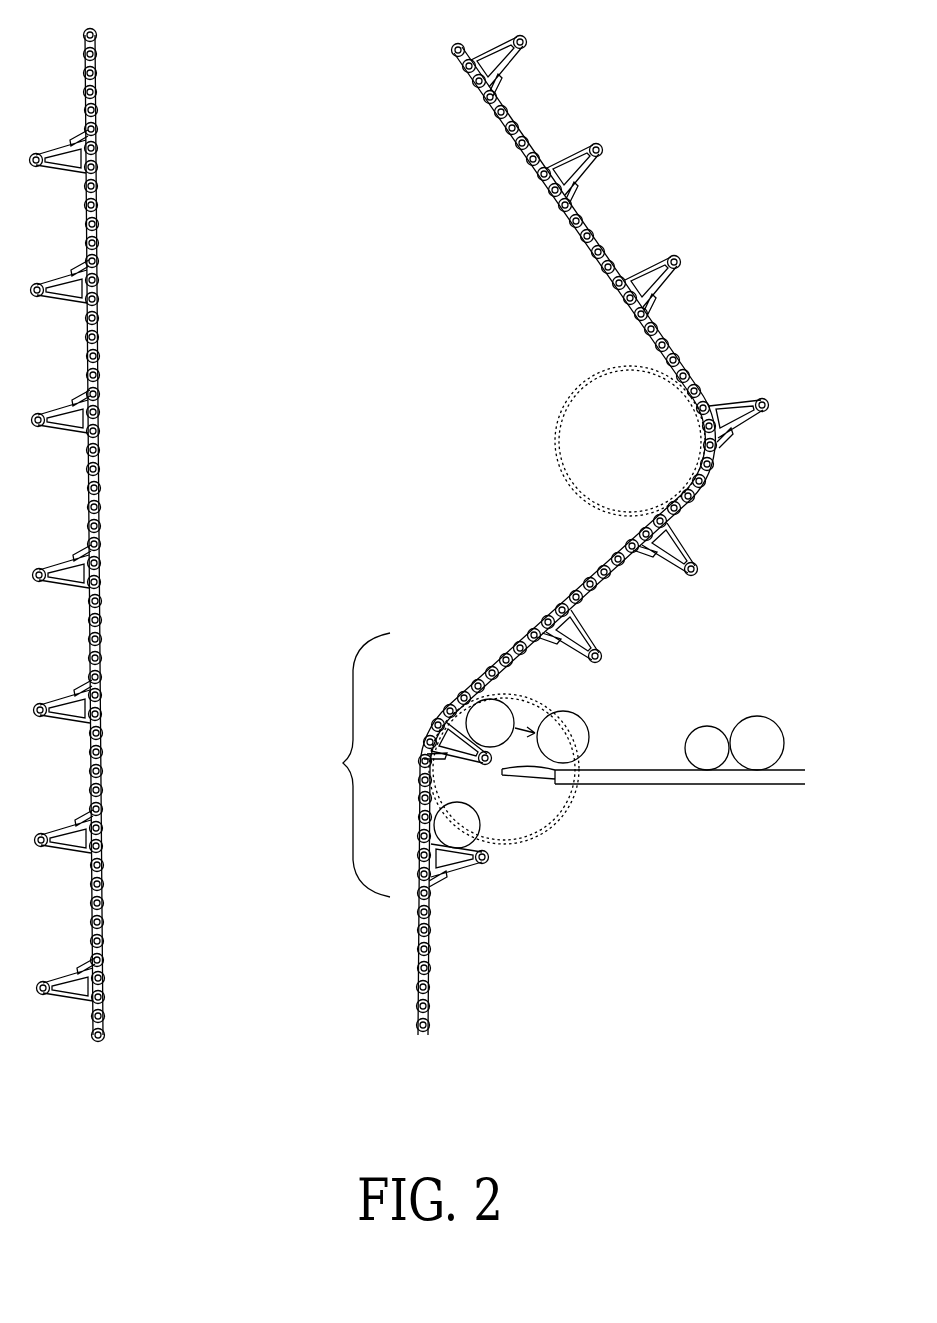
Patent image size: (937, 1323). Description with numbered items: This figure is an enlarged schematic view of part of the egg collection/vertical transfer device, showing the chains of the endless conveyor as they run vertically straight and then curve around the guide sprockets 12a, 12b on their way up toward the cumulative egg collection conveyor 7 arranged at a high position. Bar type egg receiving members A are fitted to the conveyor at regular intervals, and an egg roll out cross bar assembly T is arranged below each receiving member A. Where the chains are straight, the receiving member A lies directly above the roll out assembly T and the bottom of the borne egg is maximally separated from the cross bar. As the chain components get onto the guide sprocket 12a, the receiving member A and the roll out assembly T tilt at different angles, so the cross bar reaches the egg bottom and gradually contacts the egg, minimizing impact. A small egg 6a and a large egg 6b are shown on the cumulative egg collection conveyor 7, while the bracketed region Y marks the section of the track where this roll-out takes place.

The small egg 6a is at (698, 726).
The large egg 6b is at (770, 721).
The cumulative egg collection conveyor 7 is at (628, 768).
The guide sprocket 12a is at (527, 846).
The guide sprocket 12b is at (575, 503).
The bar type egg receiving member A is at (606, 629).
The egg roll out cross bar assembly T is at (449, 911).
The transfer region Y is at (343, 765).